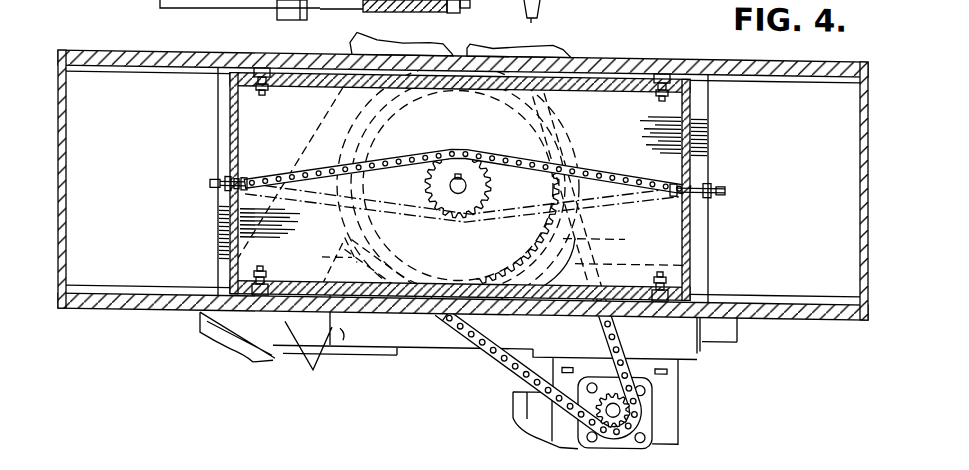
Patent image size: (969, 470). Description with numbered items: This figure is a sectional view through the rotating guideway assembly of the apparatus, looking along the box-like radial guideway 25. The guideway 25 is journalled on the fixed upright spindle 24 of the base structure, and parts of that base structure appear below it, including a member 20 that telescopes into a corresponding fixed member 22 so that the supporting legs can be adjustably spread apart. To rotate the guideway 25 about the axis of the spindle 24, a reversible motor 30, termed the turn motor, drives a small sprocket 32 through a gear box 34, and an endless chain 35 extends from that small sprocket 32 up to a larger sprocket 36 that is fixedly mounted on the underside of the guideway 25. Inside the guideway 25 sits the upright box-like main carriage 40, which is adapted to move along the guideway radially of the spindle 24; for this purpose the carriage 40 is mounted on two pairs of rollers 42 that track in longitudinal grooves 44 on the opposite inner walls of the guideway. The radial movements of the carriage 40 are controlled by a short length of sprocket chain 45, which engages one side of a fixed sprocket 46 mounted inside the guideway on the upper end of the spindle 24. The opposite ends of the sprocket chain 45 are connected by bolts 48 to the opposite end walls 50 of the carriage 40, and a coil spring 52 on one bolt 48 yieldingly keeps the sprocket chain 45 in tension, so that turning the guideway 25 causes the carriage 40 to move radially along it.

The member 20 is at (256, 368).
The fixed member 22 is at (328, 352).
The upright spindle 24 is at (467, 186).
The radial guideway 25 is at (634, 55).
The reversible motor 30 is at (520, 405).
The sprocket 32 is at (622, 402).
The gear box 34 is at (667, 421).
The endless chain 35 is at (514, 362).
The larger sprocket 36 is at (582, 231).
The main carriage 40 is at (226, 112).
The rollers 42 is at (263, 71).
The longitudinal grooves 44 is at (120, 77).
The sprocket chain 45 is at (418, 153).
The fixed sprocket 46 is at (448, 195).
The bolts 48 is at (210, 188).
The end walls 50 is at (230, 141).
The coil spring 52 is at (703, 175).